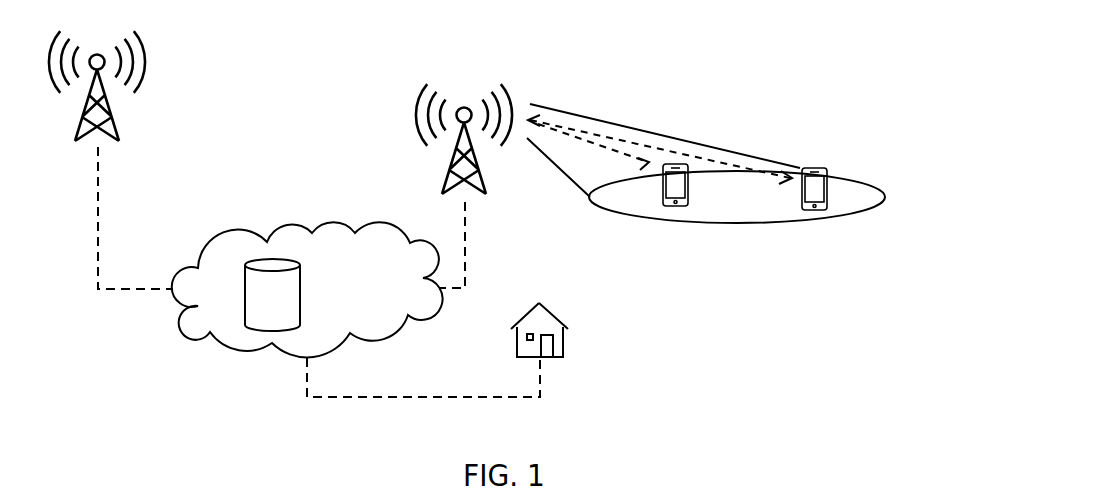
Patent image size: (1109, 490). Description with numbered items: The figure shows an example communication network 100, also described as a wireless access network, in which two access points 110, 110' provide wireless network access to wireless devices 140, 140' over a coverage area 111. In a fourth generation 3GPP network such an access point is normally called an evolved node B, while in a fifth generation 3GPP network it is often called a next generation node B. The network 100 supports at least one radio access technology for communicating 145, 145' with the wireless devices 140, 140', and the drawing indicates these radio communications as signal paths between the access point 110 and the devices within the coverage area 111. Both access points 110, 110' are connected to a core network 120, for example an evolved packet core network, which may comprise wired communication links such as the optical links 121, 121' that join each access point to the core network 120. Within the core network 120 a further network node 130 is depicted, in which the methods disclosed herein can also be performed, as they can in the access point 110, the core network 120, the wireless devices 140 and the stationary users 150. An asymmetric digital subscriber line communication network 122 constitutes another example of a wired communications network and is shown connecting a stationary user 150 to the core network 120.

The communication network 100 is at (852, 34).
The access point 110 is at (436, 139).
The access point 110' is at (124, 86).
The coverage area 111 is at (875, 186).
The core network 120 is at (307, 289).
The optical link 121 is at (477, 245).
The optical link 121' is at (135, 218).
The ADSL communication network 122 is at (400, 378).
The network node 130 is at (272, 295).
The wireless device 140 is at (798, 226).
The wireless device 140' is at (660, 222).
The communicating 145 is at (663, 139).
The communicating 145' is at (660, 174).
The stationary user 150 is at (558, 357).